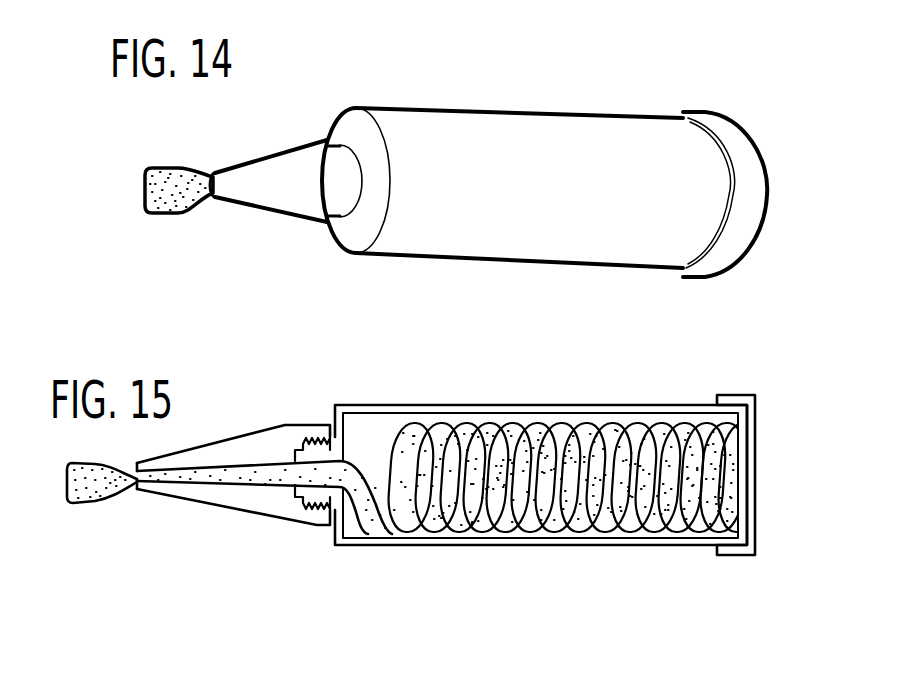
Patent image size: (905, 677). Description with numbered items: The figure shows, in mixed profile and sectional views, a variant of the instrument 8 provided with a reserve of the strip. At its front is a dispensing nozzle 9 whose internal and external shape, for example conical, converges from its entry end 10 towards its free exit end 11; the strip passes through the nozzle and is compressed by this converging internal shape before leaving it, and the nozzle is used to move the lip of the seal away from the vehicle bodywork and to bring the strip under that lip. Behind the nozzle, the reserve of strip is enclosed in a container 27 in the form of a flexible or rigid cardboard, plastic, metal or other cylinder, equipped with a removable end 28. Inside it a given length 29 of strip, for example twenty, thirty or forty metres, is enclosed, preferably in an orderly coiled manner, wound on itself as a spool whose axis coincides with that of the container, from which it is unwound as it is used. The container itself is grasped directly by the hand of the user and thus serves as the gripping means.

In FIG. 14, the applicator dispenser 8 is at (497, 143).
In FIG. 14, the dispensing nozzle 9 is at (245, 138).
In FIG. 15, the dispensing nozzle 9 is at (214, 524).
In FIG. 15, the entry end 10 is at (306, 508).
In FIG. 15, the free exit end 11 is at (126, 500).
In FIG. 14, the container 27 is at (578, 102).
In FIG. 15, the container 27 is at (603, 392).
In FIG. 14, the removable end 28 is at (769, 180).
In FIG. 15, the removable end 28 is at (758, 445).
In FIG. 15, the given length of strip 29 is at (579, 482).